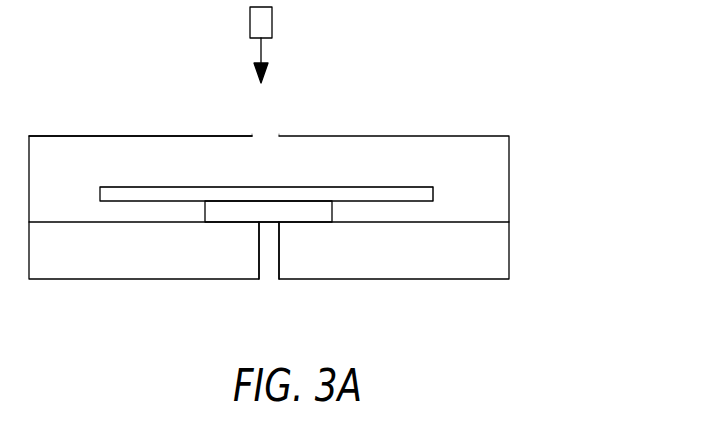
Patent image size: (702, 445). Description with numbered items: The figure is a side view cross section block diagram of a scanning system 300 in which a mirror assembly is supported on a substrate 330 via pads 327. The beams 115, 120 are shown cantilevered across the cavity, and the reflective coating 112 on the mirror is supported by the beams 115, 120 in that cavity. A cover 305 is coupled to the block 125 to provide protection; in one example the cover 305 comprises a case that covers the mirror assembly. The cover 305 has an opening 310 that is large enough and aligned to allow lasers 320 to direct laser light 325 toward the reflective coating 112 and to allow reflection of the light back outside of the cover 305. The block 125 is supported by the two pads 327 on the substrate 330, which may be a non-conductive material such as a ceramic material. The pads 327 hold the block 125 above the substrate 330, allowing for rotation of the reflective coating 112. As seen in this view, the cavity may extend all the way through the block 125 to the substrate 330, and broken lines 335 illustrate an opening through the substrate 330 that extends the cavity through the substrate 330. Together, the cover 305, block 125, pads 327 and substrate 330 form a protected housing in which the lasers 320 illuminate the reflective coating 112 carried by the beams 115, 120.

The scanning system 300 is at (511, 41).
The cover 305 is at (373, 136).
The opening 310 is at (268, 136).
The lasers 320 is at (272, 22).
The laser light 325 is at (261, 53).
The pads 327 is at (271, 224).
The substrate 330 is at (510, 247).
The broken lines 335 is at (299, 246).
The reflective coating 112 is at (262, 187).
The beam 115 is at (424, 187).
The beam 120 is at (124, 187).
The block 125 is at (126, 202).